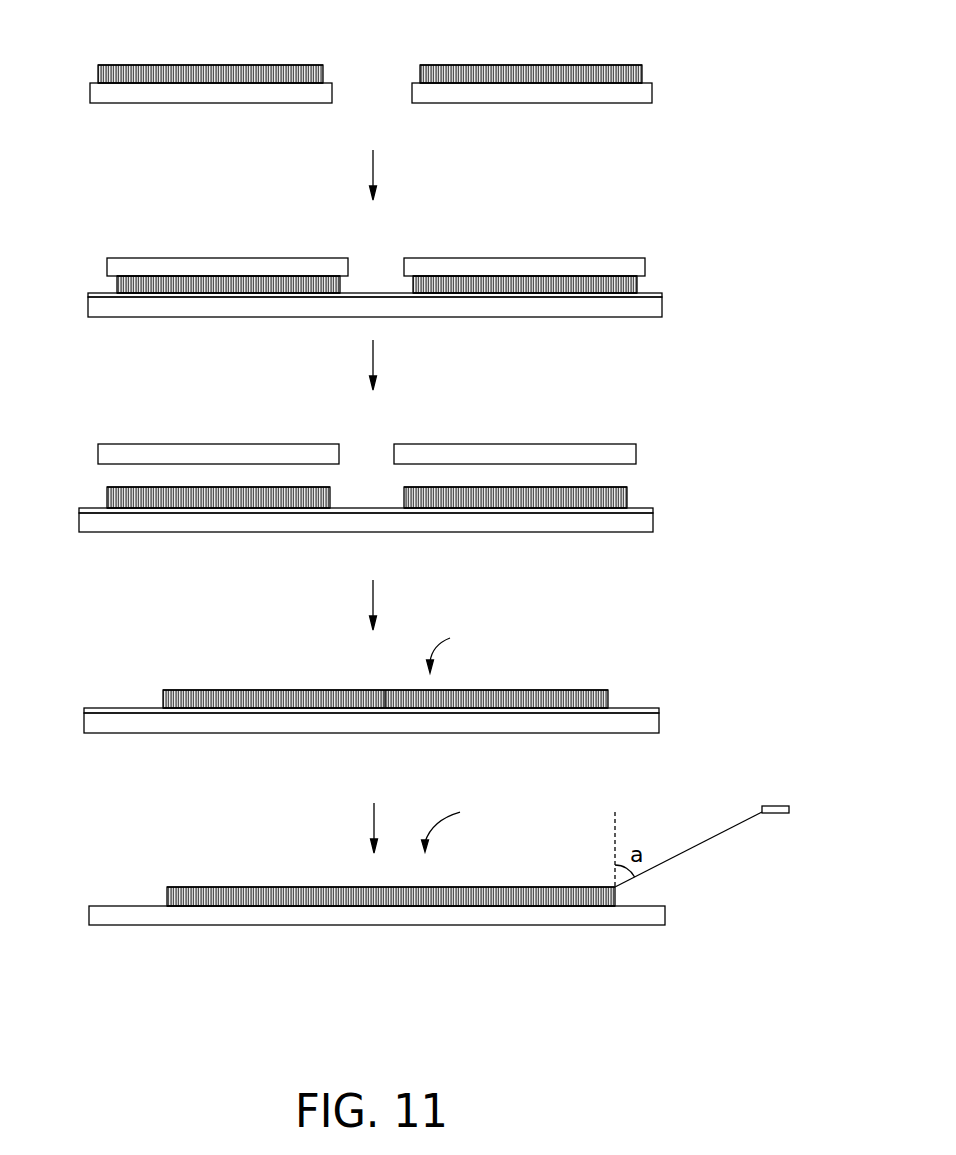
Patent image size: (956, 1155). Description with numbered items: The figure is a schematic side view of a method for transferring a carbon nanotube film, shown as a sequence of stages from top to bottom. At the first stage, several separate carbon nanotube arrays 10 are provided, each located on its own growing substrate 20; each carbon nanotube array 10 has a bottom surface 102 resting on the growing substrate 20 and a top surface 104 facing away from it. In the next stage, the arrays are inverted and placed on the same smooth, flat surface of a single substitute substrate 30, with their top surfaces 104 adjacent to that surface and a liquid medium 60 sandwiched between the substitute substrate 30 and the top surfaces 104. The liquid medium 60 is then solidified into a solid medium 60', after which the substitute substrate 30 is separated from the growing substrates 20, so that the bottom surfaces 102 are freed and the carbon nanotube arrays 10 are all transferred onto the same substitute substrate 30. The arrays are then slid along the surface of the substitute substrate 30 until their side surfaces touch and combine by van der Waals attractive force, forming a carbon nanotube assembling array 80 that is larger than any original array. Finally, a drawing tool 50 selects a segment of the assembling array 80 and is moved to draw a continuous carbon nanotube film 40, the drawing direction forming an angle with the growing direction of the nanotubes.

The carbon nanotube array 10 is at (305, 65).
The bottom surface 102 is at (160, 85).
The top surface 104 is at (123, 65).
The growing substrate 20 is at (275, 95).
The substitute substrate 30 is at (650, 312).
The carbon nanotube film 40 is at (707, 842).
The drawing tool 50 is at (772, 807).
The liquid medium 60 is at (416, 501).
The solid medium 60' is at (401, 508).
The carbon nanotube assembling array 80 is at (464, 739).